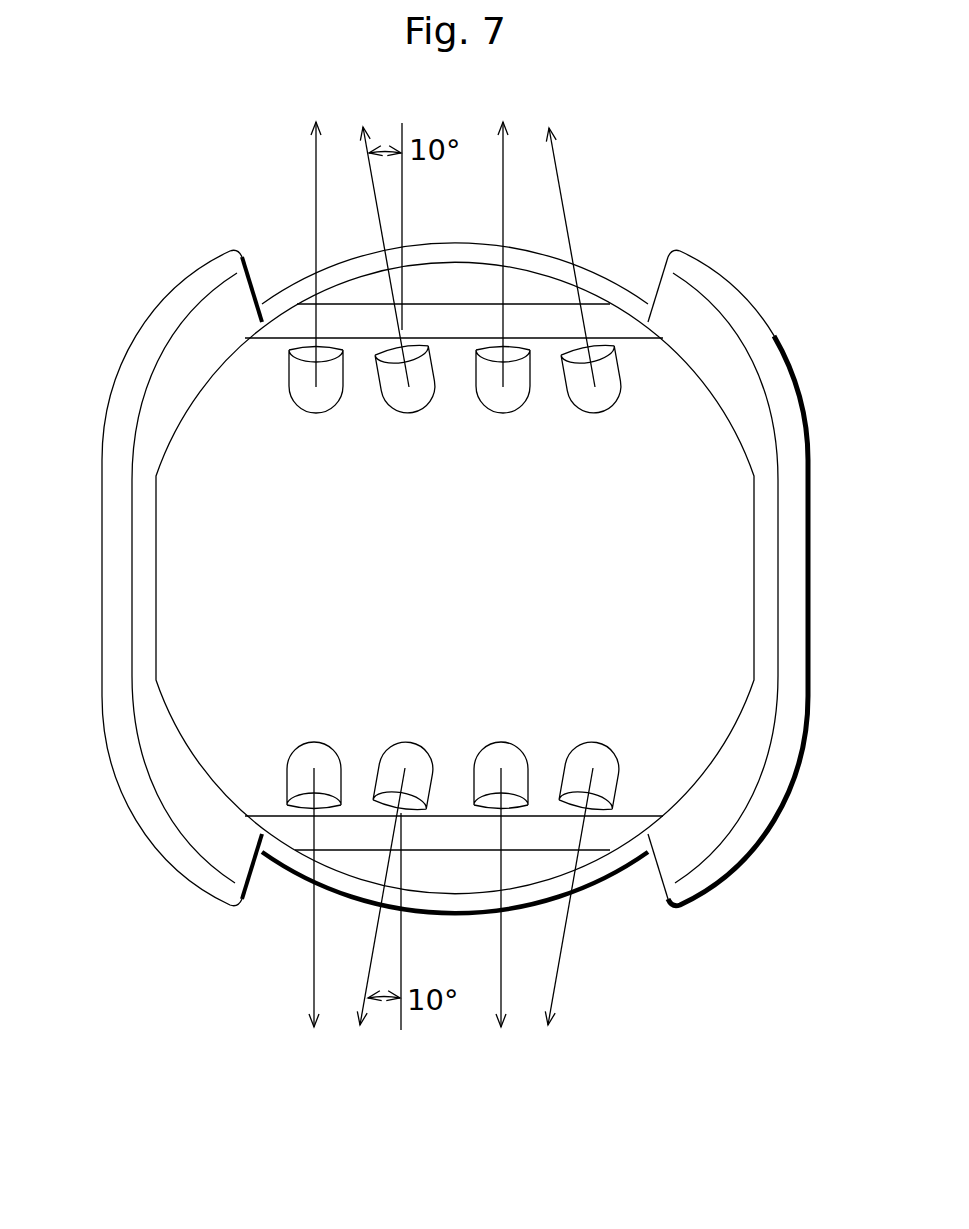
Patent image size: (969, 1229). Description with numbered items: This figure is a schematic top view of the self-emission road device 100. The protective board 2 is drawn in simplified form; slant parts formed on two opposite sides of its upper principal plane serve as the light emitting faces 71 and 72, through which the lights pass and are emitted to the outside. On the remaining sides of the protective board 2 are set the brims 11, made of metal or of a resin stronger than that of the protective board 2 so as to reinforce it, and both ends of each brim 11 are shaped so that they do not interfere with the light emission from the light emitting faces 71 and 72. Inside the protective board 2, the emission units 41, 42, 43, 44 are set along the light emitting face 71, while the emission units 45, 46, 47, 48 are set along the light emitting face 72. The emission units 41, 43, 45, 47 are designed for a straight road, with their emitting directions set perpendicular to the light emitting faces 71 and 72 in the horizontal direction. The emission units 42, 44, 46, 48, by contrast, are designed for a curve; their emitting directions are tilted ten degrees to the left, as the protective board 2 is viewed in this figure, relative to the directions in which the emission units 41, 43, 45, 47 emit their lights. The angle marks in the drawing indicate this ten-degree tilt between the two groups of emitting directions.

The self-emission road device 100 is at (50, 205).
The protective board 2 is at (733, 570).
The brim 11 is at (150, 349).
The light emitting face 71 is at (613, 327).
The light emitting face 72 is at (613, 830).
The emission unit 41 is at (314, 417).
The emission unit 42 is at (416, 417).
The emission unit 43 is at (500, 417).
The emission unit 44 is at (601, 417).
The emission unit 45 is at (313, 739).
The emission unit 46 is at (416, 739).
The emission unit 47 is at (500, 739).
The emission unit 48 is at (600, 739).